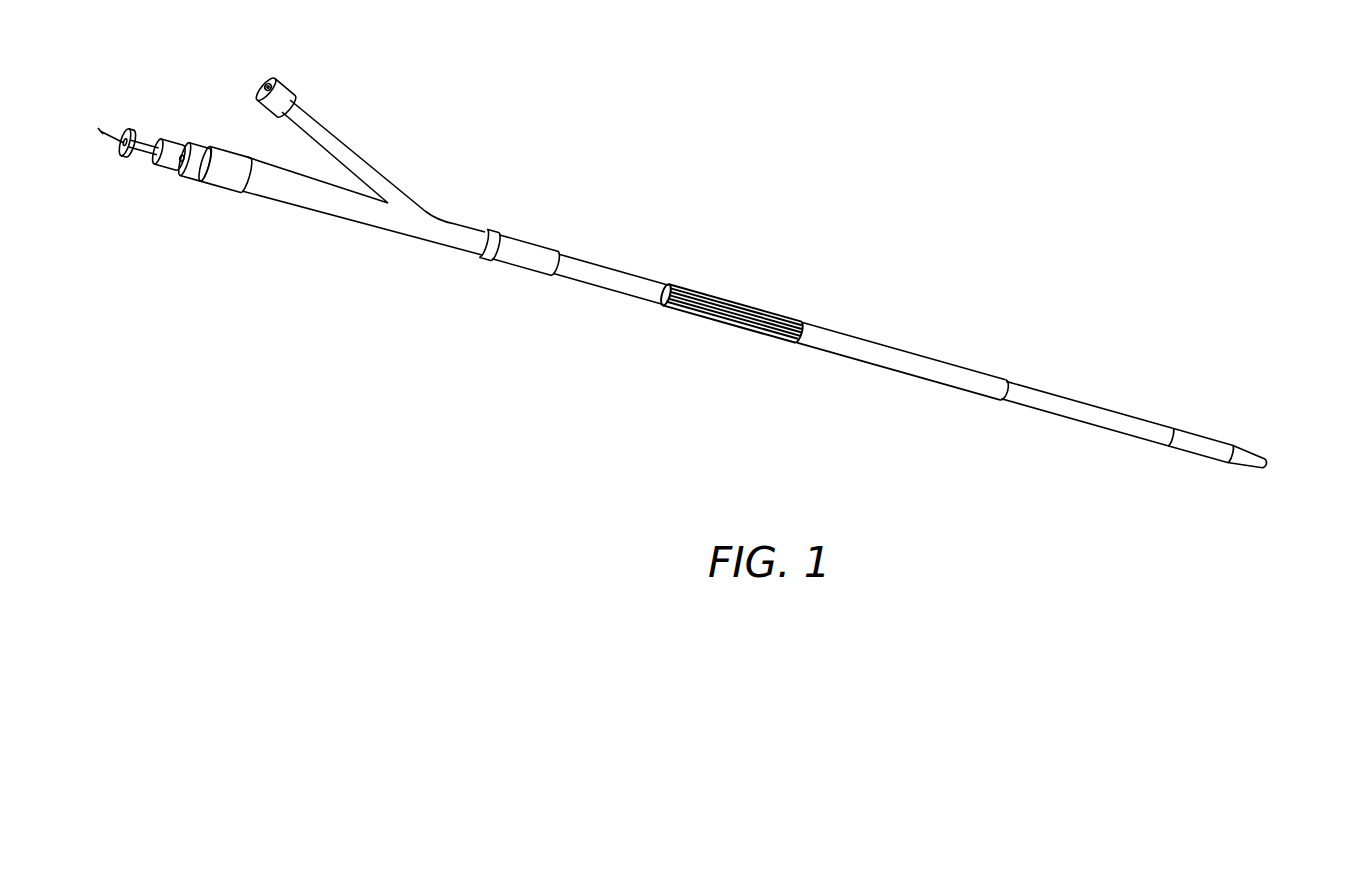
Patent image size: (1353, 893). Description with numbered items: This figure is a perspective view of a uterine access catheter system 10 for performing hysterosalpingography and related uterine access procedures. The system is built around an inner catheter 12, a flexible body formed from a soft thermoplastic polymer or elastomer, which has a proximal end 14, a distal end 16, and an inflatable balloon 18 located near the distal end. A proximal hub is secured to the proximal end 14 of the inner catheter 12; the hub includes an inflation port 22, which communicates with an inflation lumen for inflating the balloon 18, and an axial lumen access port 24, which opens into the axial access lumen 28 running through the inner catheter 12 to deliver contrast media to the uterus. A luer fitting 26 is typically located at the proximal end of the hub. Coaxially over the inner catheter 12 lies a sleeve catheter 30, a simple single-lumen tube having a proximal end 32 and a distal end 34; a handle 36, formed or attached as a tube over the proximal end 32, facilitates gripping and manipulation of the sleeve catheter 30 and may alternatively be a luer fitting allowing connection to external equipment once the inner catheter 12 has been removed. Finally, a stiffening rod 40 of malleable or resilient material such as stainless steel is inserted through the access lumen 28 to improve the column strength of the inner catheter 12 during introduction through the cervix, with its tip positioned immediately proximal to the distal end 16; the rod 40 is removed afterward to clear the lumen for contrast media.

The uterine access catheter system 10 is at (733, 255).
The inner catheter 12 is at (725, 317).
The proximal end 14 is at (490, 227).
The distal end 16 is at (1273, 460).
The inflatable balloon 18 is at (1198, 452).
The inflation port 22 is at (281, 78).
The axial lumen access port 24 is at (222, 178).
The luer fitting 26 is at (125, 130).
The axial access lumen 28 is at (773, 312).
The sleeve catheter 30 is at (613, 280).
The proximal end 32 is at (498, 265).
The distal end 34 is at (1003, 378).
The handle 36 is at (520, 245).
The stiffening rod 40 is at (105, 137).